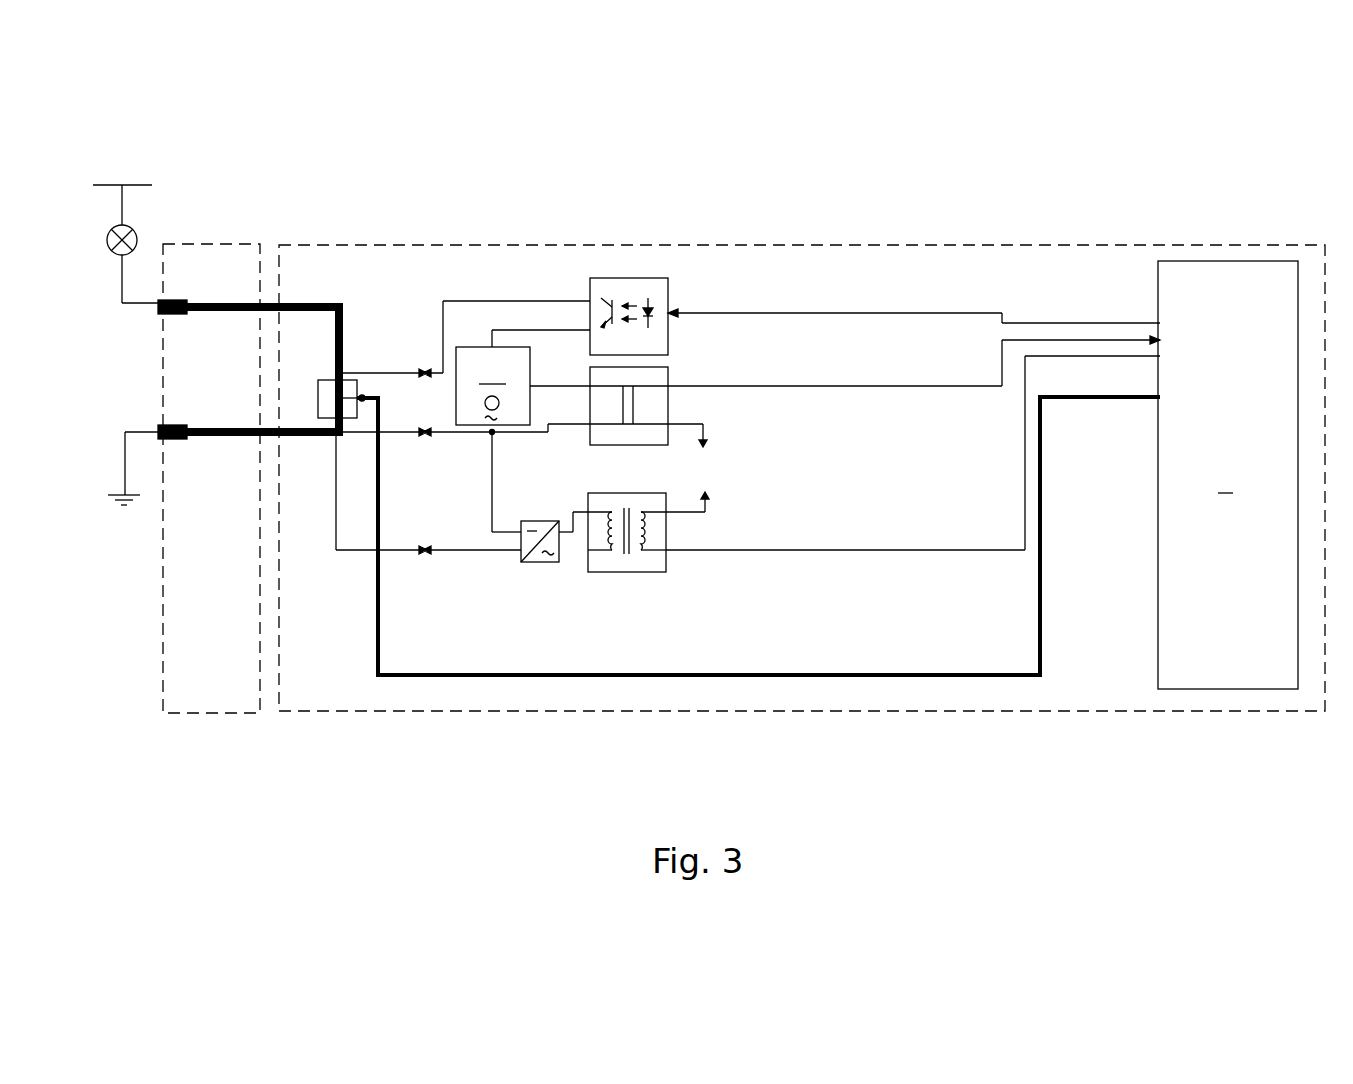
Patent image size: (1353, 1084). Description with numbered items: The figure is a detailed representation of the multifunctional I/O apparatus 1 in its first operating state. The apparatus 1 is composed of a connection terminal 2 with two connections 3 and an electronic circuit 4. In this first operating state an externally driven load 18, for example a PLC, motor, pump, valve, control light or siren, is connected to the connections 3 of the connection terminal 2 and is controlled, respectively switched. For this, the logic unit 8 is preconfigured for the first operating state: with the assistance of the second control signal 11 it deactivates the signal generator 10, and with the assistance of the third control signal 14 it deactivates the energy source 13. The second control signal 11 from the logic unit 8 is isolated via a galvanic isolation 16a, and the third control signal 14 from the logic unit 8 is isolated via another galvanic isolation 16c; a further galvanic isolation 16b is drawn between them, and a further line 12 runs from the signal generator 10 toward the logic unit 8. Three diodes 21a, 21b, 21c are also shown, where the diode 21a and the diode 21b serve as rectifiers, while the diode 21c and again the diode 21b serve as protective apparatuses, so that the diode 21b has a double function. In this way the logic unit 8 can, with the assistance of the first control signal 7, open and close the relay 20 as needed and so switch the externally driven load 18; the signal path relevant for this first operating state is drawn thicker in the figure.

The multifunctional I/O apparatus 1 is at (148, 707).
The connection terminal 2 is at (208, 244).
The connections 3 is at (185, 313).
The electronic circuit 4 is at (738, 245).
The first control signal 7 is at (868, 675).
The logic unit 8 is at (1228, 475).
The signal generator 10 is at (523, 431).
The second control signal 11 is at (848, 315).
The signal line 12 is at (848, 386).
The energy source 13 is at (536, 566).
The third control signal 14 is at (848, 550).
The galvanic isolation 16a is at (668, 297).
The isolating element 16b is at (668, 380).
The galvanic isolation 16c is at (666, 499).
The externally driven load 18 is at (108, 243).
The relay 20 is at (318, 405).
The diode 21a is at (420, 368).
The diode 21b is at (430, 437).
The diode 21c is at (430, 556).